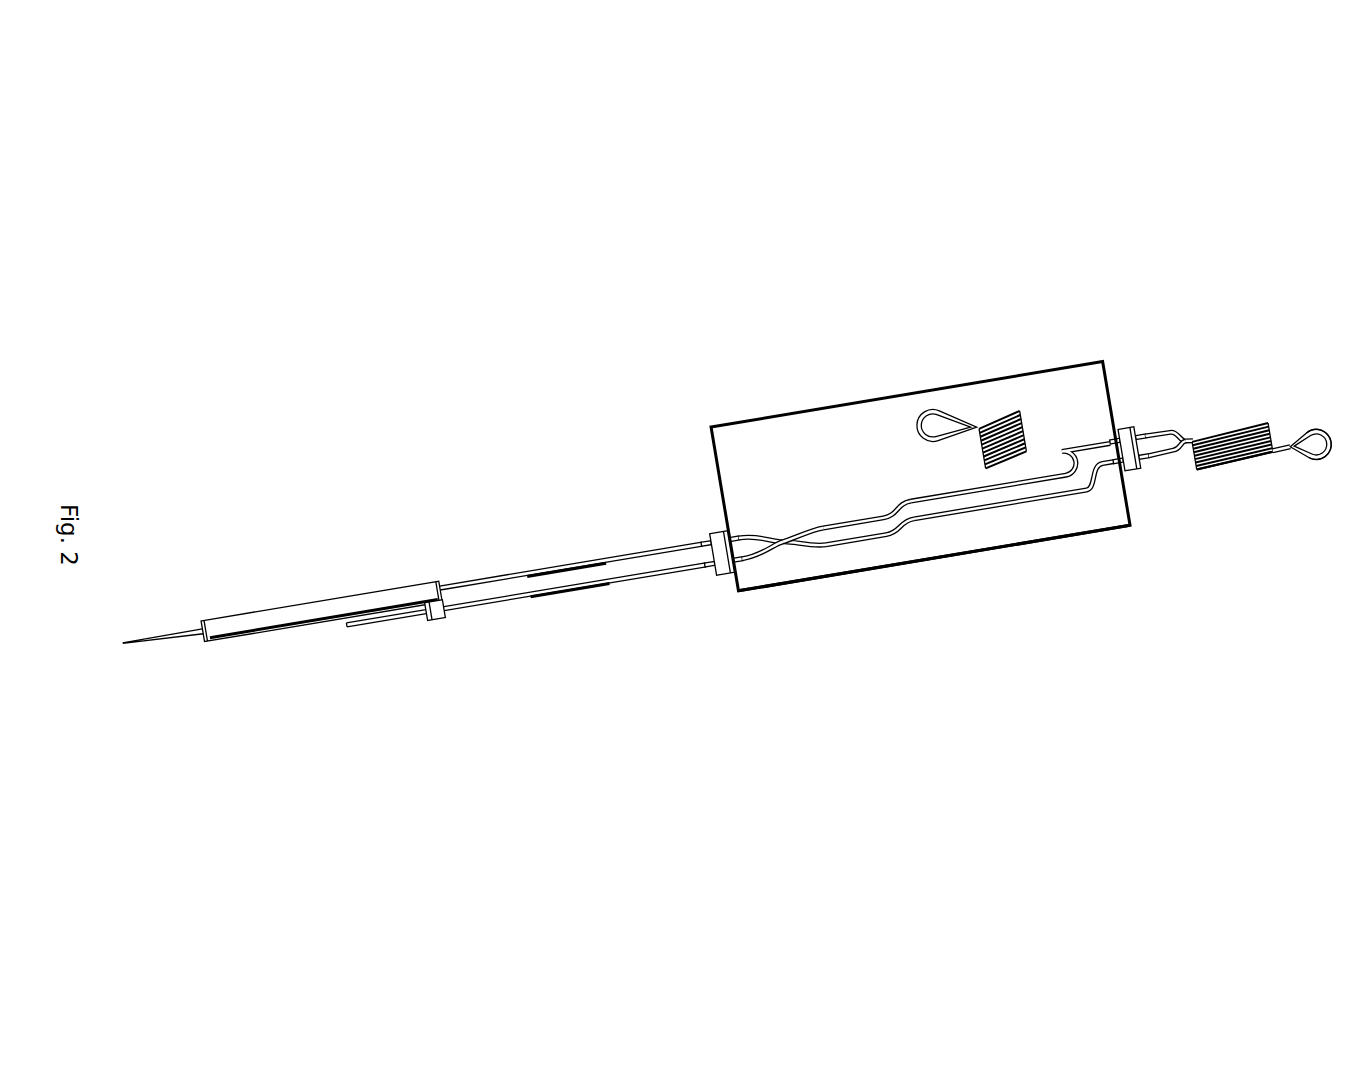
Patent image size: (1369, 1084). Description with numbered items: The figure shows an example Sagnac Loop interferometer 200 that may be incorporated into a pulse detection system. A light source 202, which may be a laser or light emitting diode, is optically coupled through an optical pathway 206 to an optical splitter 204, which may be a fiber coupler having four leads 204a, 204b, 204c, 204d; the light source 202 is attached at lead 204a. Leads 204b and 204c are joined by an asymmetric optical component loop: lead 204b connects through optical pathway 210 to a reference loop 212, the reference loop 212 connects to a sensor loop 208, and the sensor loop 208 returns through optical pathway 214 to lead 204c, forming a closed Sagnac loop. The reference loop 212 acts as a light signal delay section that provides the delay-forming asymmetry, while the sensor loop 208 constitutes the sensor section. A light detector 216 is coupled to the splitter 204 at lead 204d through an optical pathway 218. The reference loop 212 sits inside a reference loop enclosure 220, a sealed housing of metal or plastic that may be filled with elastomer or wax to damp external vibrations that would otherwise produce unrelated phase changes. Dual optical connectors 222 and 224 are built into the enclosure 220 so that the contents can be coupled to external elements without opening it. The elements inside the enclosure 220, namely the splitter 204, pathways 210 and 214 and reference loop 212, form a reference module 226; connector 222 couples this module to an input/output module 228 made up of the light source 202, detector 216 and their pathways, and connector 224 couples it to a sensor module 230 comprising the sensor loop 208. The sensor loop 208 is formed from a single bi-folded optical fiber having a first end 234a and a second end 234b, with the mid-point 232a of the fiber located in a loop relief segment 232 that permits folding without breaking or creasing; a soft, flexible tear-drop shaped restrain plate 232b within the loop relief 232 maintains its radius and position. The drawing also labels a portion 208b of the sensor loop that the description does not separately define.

The Sagnac Loop interferometer 200 is at (586, 470).
The light source 202 is at (353, 598).
The optical splitter 204 is at (783, 538).
The lead 204a is at (742, 536).
The lead 204b is at (823, 528).
The lead 204c is at (826, 547).
The lead 204d is at (744, 563).
The optical pathway 206 is at (563, 562).
The sensor loop 208 is at (1243, 464).
The tether wire end 208b is at (1210, 472).
The optical pathway 210 is at (905, 502).
The reference loop 212 is at (1032, 437).
The optical pathway 214 is at (912, 528).
The light detector 216 is at (437, 624).
The optical pathway 218 is at (582, 593).
The reference loop enclosure 220 is at (893, 570).
The optical connector 222 is at (722, 575).
The optical connector 224 is at (1137, 474).
The reference module 226 is at (832, 372).
The input/output module 228 is at (484, 558).
The sensor module 230 is at (1198, 404).
The loop relief segment 232 is at (1254, 415).
The mid-point of the fiber 232a is at (1313, 430).
The restrain plate 232b is at (1313, 465).
The first end 234a is at (1150, 430).
The second end 234b is at (1160, 457).